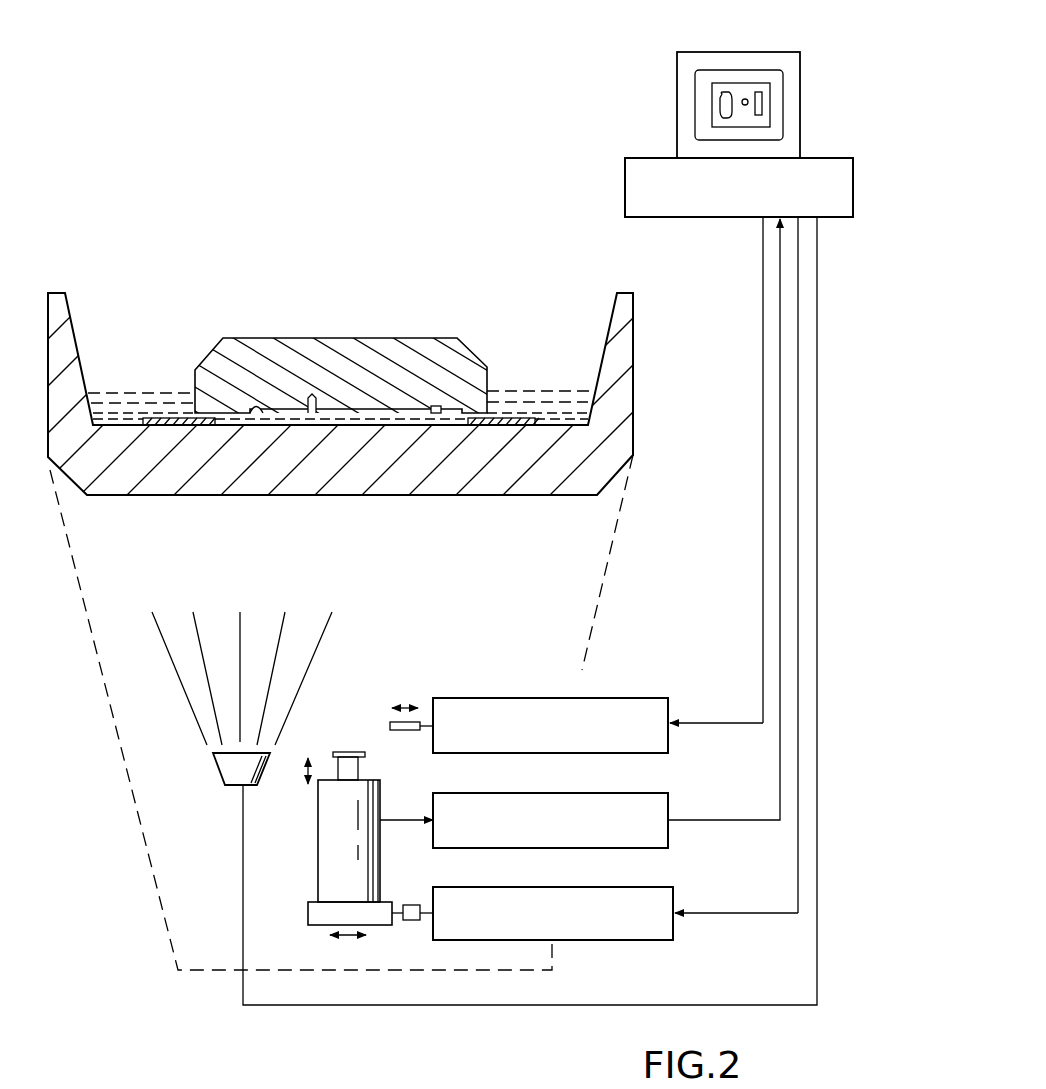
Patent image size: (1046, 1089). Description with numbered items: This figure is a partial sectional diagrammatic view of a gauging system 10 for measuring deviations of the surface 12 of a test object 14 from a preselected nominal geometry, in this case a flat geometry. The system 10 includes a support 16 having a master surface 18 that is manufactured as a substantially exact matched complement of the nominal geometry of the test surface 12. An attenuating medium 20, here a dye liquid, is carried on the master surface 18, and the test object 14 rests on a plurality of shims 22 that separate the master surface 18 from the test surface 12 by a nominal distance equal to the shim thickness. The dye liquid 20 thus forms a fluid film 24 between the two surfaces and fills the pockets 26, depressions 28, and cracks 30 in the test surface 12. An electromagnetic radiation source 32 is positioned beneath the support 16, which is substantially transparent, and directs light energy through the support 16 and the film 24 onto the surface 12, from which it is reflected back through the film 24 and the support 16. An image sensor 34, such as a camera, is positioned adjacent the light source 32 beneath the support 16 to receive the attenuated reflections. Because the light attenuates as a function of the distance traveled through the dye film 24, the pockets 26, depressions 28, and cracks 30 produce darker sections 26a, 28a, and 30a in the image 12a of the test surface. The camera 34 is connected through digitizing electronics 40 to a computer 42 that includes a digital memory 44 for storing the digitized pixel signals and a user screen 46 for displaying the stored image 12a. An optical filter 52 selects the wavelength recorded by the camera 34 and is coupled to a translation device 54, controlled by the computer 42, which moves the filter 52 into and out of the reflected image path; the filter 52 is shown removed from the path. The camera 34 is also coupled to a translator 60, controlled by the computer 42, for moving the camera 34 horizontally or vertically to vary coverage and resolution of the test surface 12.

The gauging system 10 is at (118, 218).
The test surface 12 is at (490, 377).
The image of the test object surface 12a is at (770, 87).
The test object 14 is at (347, 338).
The support 16 is at (192, 494).
The master surface 18 is at (128, 420).
The attenuating medium 20 is at (127, 392).
The shims 22 is at (203, 424).
The fluid film 24 is at (413, 421).
The pockets 26 is at (278, 408).
The darker image section of pockets 26a is at (727, 92).
The depressions 28 is at (437, 407).
The darker image section of depressions 28a is at (747, 100).
The cracks 30 is at (439, 410).
The darker image section of cracks 30a is at (762, 115).
The electromagnetic radiation source 32 is at (222, 775).
The image sensor 34 is at (322, 843).
The digitizing electronics 40 is at (672, 795).
The computer 42 is at (636, 95).
The digital memory 44 is at (622, 170).
The user screen 46 is at (695, 78).
The optical filter 52 is at (390, 726).
The translation device 54 is at (490, 698).
The translator 60 is at (674, 890).